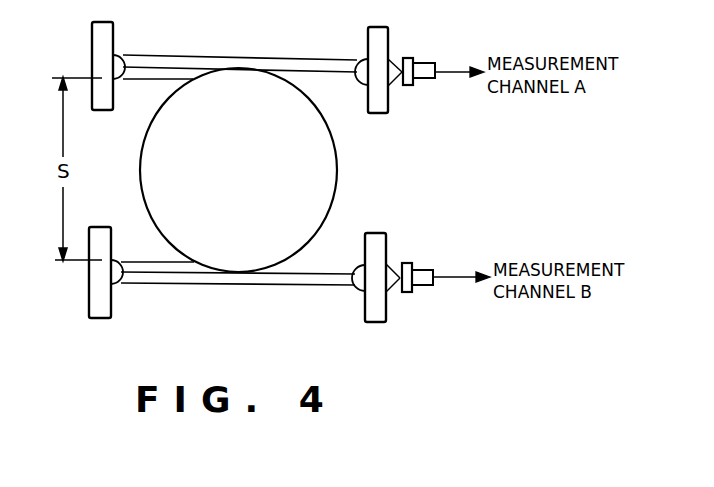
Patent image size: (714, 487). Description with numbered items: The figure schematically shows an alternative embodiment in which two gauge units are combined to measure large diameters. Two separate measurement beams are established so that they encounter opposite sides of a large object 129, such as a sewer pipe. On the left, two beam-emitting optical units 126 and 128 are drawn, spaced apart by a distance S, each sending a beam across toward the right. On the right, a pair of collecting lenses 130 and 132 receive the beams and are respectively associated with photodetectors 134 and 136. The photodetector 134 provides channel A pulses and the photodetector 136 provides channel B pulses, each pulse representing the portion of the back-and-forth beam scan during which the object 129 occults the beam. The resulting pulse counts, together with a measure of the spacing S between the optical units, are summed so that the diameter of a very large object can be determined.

The lamp (light source) for channel A 126 is at (176, 56).
The lamp (light source) for channel B 128 is at (135, 285).
The large object 129 is at (337, 155).
The collecting lens 130 is at (358, 54).
The collecting lens 132 is at (358, 295).
The photodetector 134 is at (412, 55).
The photodetector 136 is at (410, 262).